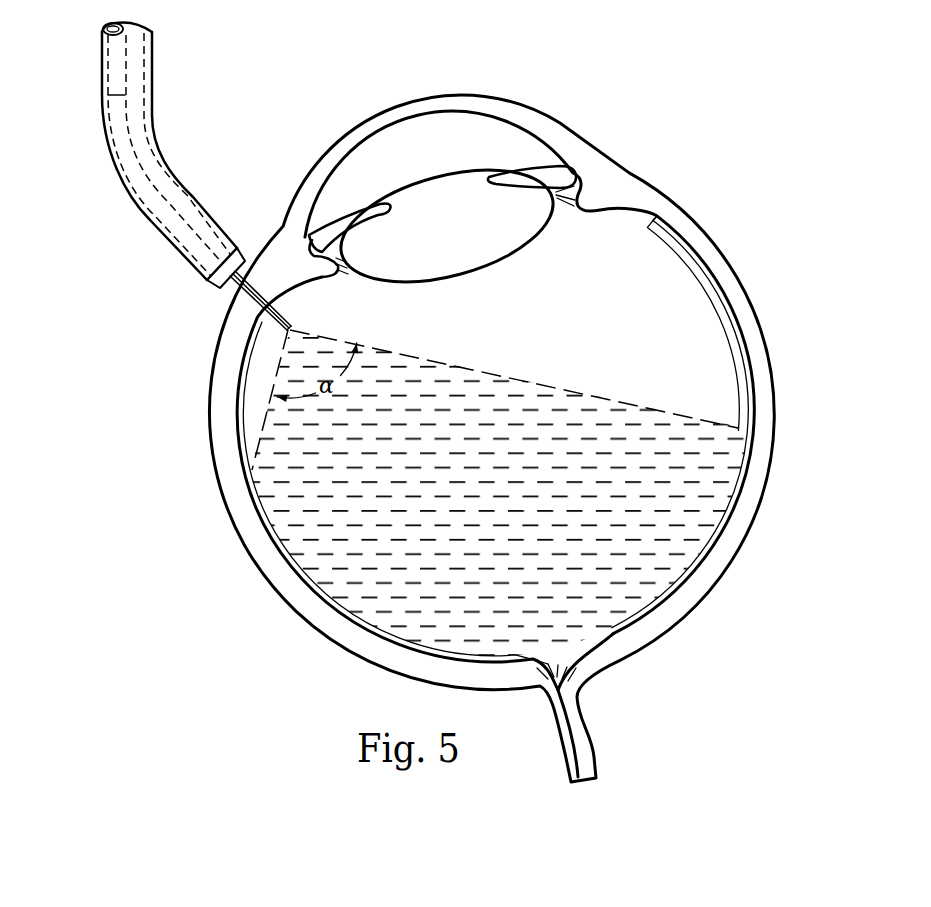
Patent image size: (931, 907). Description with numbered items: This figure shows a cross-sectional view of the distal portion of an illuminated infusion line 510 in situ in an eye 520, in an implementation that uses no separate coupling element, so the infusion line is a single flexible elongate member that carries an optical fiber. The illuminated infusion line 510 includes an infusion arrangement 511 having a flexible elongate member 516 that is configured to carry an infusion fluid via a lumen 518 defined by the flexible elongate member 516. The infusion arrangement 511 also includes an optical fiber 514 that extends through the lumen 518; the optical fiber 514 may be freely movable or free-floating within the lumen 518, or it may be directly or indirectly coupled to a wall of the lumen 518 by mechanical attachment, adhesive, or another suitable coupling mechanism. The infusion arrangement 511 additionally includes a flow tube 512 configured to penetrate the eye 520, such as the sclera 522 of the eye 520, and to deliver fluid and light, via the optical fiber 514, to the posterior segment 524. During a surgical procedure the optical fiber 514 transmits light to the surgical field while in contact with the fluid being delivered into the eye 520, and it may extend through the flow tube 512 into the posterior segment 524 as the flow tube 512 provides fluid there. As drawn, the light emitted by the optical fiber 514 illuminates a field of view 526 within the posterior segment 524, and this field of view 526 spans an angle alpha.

The illuminated infusion line 510 is at (201, 176).
The infusion arrangement 511 is at (242, 222).
The flow tube 512 is at (291, 316).
The optical fiber 514 is at (112, 93).
The flexible elongate member 516 is at (177, 252).
The lumen 518 is at (116, 154).
The eye 520 is at (234, 544).
The sclera 522 is at (228, 473).
The posterior segment 524 is at (688, 318).
The field of view 526 is at (544, 382).